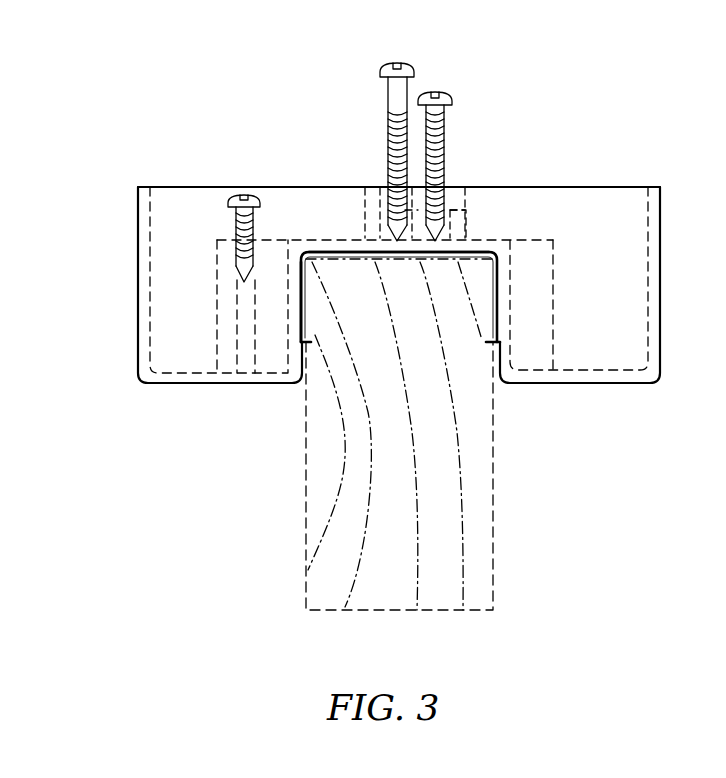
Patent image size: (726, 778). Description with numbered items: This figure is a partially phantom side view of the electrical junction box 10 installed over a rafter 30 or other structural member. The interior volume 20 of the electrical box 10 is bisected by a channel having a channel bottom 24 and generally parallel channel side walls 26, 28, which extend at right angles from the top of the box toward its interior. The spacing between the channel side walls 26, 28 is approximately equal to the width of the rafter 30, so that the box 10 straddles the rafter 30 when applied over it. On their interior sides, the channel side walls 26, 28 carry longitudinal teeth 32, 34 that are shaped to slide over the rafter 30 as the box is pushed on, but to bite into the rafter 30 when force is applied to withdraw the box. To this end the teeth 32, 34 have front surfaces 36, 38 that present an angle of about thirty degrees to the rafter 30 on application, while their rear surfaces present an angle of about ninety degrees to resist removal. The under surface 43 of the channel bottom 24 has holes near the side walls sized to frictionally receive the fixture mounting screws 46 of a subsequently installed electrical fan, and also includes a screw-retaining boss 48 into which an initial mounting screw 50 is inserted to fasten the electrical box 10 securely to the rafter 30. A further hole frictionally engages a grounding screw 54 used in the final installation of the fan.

The electrical junction box 10 is at (624, 126).
The volume 20 is at (170, 225).
The channel bottom 24 is at (455, 278).
The channel side wall 26 is at (500, 277).
The channel side wall 28 is at (300, 301).
The rafter 30 is at (315, 532).
The longitudinal tooth 32 is at (500, 341).
The longitudinal tooth 34 is at (296, 347).
The front surface 36 is at (485, 342).
The front surface 38 is at (325, 400).
The under surface 43 is at (344, 240).
The fixture mounting screw 46 is at (386, 66).
The screw-retaining boss 48 is at (453, 217).
The initial mounting screw 50 is at (437, 122).
The grounding screw 54 is at (233, 193).